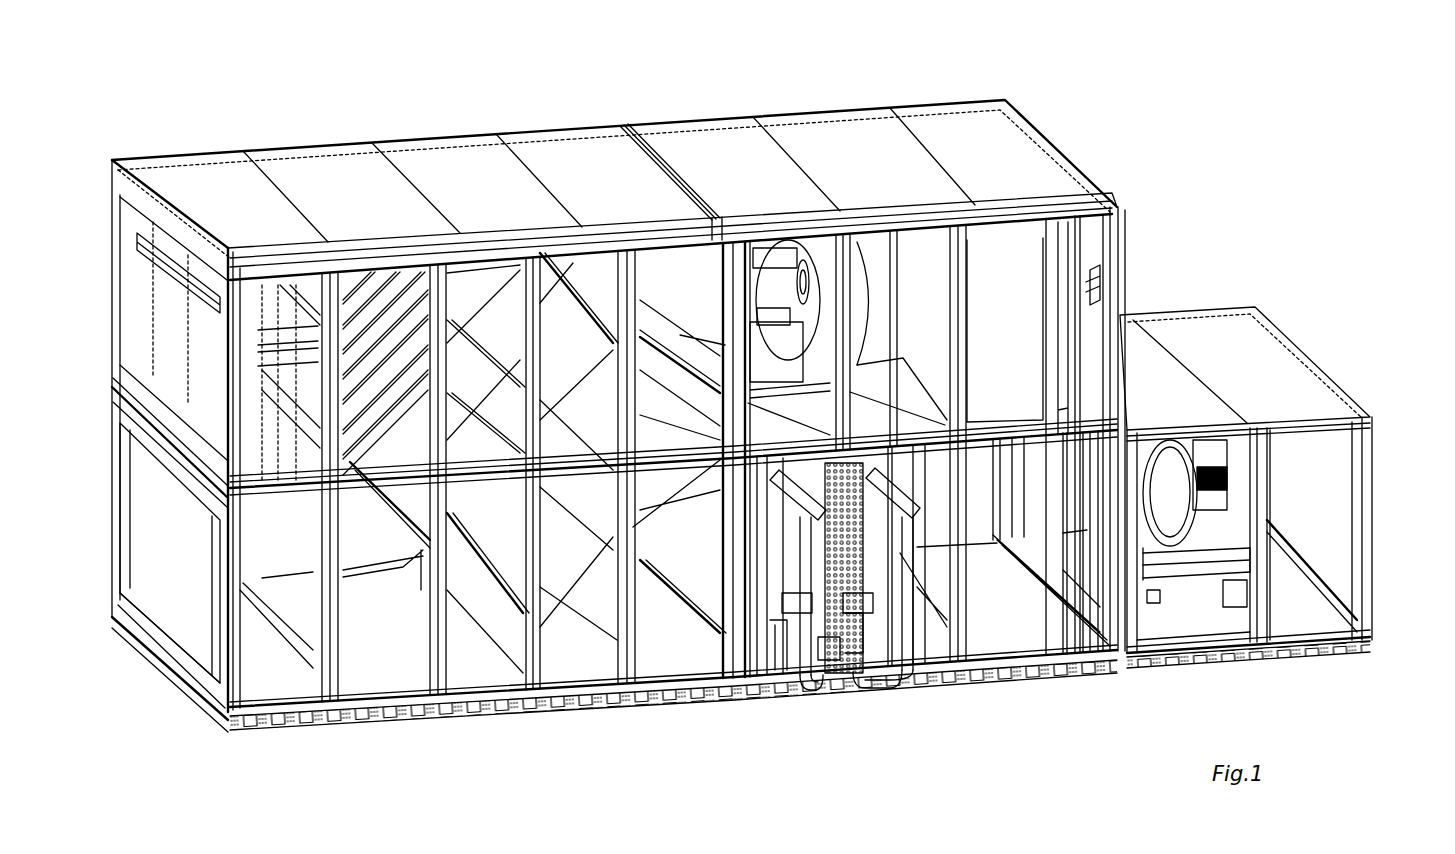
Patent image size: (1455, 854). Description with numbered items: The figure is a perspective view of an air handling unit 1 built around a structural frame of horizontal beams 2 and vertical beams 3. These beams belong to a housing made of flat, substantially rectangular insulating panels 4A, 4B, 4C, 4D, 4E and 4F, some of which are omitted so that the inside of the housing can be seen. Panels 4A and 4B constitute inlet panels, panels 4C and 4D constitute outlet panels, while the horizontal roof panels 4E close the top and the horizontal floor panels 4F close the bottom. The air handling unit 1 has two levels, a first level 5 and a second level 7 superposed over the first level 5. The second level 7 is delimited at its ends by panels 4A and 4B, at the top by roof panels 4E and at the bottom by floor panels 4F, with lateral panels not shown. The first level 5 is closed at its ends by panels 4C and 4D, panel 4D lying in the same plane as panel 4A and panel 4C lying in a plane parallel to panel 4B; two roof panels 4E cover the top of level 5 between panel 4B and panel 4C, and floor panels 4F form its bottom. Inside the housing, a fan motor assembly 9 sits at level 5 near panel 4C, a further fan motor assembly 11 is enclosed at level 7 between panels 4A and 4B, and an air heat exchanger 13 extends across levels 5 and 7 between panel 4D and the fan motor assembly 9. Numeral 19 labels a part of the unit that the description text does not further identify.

The air handling unit 1 is at (1170, 218).
The horizontal beams 2 is at (468, 245).
The vertical beams 3 is at (330, 647).
The inlet panel 4A is at (130, 188).
The inlet panel 4B is at (1073, 350).
The outlet panel 4C is at (1338, 592).
The outlet panel 4D is at (157, 638).
The horizontal roof panel 4E is at (335, 180).
The horizontal floor panel 4F is at (795, 427).
The first level 5 is at (1420, 390).
The second level 7 is at (1297, 30).
The fan motor assembly 9 is at (1238, 478).
The fan motor assembly 11 is at (773, 290).
The air heat exchanger 13 is at (558, 532).
The rear wall panel 19 is at (1090, 392).